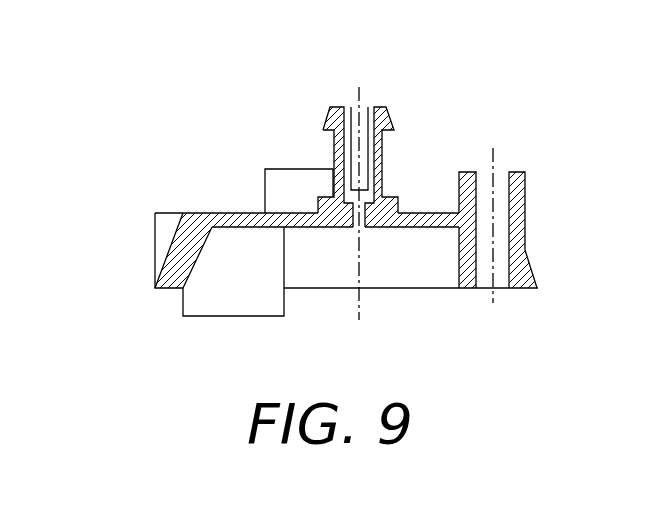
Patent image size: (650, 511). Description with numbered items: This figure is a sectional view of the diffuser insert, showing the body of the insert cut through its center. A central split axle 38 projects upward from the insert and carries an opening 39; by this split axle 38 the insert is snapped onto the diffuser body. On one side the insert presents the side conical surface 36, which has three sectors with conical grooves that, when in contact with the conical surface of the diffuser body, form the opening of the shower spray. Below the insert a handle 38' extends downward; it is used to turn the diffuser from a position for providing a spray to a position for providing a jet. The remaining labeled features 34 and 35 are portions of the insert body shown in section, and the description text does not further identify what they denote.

The tubular sleeve 34 is at (457, 165).
The base plate 35 is at (161, 207).
The side conical surface 36 is at (152, 244).
The central split axle 38 is at (322, 164).
The handle 38' is at (237, 302).
The opening 39 is at (366, 238).